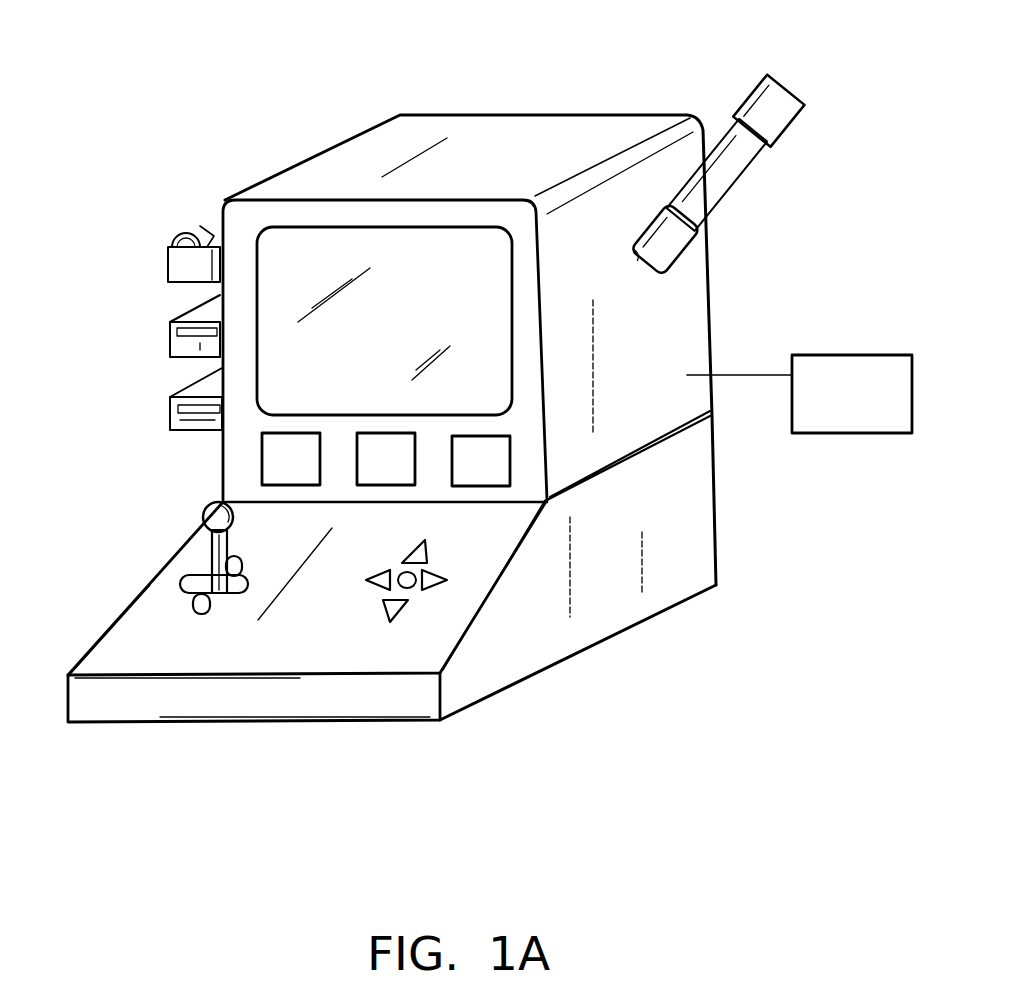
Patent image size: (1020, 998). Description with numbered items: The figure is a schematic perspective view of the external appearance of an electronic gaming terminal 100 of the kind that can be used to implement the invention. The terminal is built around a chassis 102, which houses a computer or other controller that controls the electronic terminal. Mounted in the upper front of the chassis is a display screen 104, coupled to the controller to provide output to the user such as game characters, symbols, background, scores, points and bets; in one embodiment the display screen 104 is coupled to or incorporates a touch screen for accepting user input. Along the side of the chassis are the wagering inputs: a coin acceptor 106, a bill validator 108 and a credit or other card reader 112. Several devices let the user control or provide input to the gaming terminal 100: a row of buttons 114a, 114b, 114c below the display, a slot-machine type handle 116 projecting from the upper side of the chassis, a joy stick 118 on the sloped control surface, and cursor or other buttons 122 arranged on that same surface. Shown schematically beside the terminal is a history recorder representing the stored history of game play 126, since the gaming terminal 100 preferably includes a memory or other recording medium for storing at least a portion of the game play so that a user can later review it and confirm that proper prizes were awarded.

The gaming terminal 100 is at (701, 109).
The chassis 102 is at (365, 150).
The display screen 104 is at (462, 300).
The coin acceptor 106 is at (175, 265).
The bill validator 108 is at (172, 350).
The card reader 112 is at (170, 412).
The button 114a is at (280, 457).
The button 114b is at (378, 457).
The button 114c is at (475, 462).
The slot-machine type handle 116 is at (718, 180).
The joy stick 118 is at (205, 527).
The cursor buttons 122 is at (447, 580).
The history of game play 126 is at (835, 355).